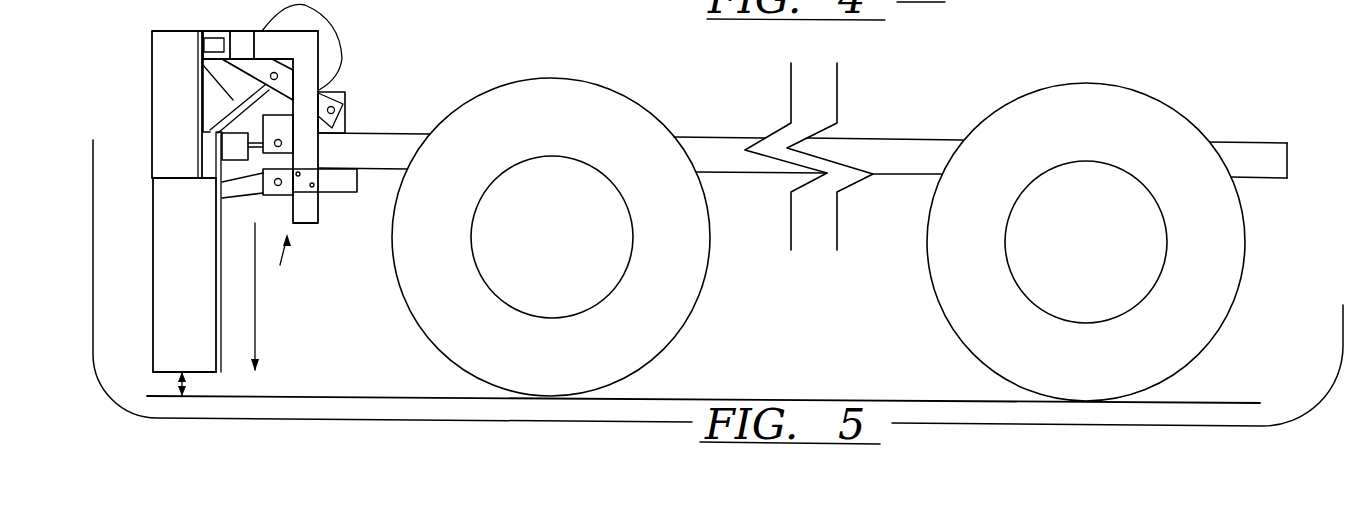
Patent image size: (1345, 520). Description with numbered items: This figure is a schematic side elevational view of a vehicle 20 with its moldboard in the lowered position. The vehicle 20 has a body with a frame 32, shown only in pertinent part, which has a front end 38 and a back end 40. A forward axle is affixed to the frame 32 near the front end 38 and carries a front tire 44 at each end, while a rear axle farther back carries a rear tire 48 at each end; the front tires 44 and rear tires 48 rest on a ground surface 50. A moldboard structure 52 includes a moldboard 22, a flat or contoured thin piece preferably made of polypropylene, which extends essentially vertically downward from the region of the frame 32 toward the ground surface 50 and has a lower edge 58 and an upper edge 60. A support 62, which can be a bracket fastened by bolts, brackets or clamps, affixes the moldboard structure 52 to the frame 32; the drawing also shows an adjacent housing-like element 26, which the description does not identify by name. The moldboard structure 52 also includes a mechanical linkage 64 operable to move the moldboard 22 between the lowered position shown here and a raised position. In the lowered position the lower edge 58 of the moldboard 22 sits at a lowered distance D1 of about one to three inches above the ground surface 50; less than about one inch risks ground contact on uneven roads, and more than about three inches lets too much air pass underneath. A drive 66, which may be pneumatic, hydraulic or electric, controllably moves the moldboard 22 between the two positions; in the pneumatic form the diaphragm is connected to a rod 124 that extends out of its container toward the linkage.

The vehicle 20 is at (905, 112).
The moldboard 22 is at (180, 229).
The housing 26 is at (177, 71).
The frame 32 is at (388, 157).
The front end 38 is at (333, 193).
The back end 40 is at (1288, 160).
The front tire 44 is at (645, 308).
The rear tire 48 is at (1182, 342).
The ground surface 50 is at (322, 397).
The moldboard structure 52 is at (288, 263).
The lower edge 58 is at (216, 356).
The upper edge 60 is at (207, 137).
The support 62 is at (346, 190).
The mechanical linkage 64 is at (242, 202).
The drive 66 is at (352, 50).
The rod 124 is at (203, 63).
The lowered distance D1 is at (175, 383).